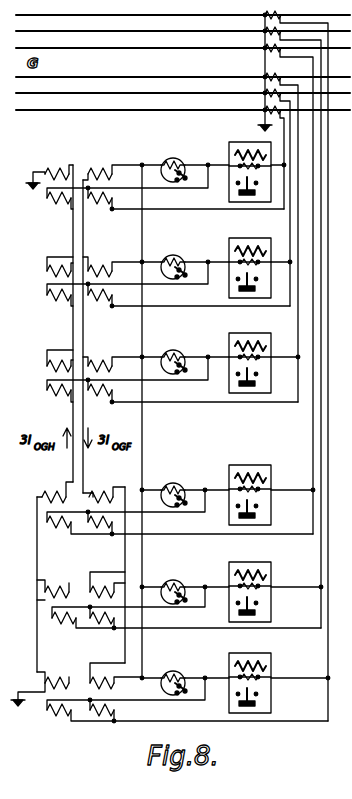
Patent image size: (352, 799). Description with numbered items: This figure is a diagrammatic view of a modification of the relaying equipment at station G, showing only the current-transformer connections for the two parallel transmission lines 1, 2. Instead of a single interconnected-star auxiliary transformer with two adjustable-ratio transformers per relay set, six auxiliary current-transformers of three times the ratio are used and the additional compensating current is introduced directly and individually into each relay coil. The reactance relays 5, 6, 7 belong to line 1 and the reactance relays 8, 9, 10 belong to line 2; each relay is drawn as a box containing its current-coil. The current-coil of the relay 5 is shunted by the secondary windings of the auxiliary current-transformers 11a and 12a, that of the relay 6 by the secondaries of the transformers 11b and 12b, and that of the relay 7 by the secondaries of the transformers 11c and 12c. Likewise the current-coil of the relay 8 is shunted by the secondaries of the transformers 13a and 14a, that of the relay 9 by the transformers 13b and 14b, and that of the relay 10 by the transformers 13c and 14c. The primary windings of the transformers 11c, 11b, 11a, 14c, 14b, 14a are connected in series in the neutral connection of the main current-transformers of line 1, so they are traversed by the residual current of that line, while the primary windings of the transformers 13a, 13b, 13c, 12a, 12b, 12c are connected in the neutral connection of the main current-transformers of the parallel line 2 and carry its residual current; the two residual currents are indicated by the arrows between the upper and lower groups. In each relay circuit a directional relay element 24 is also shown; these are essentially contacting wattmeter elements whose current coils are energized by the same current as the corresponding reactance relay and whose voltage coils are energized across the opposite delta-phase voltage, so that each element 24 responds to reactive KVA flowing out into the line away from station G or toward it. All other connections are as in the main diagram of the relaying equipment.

The transmission line 1 is at (186, 110).
The parallel transmission line 2 is at (127, 16).
The reactance relay 5 is at (271, 350).
The reactance relay 6 is at (271, 256).
The reactance relay 7 is at (251, 140).
The reactance relay 8 is at (272, 658).
The reactance relay 9 is at (272, 568).
The reactance relay 10 is at (272, 476).
The auxiliary current-transformer 11a is at (99, 362).
The auxiliary current-transformer 11b is at (97, 266).
The auxiliary current-transformer 11c is at (97, 166).
The auxiliary current-transformer 12a is at (56, 356).
The auxiliary current-transformer 12b is at (48, 260).
The auxiliary current-transformer 12c is at (57, 164).
The auxiliary current-transformer 13a is at (99, 676).
The auxiliary current-transformer 13b is at (97, 584).
The auxiliary current-transformer 13c is at (95, 494).
The auxiliary current-transformer 14a is at (52, 676).
The auxiliary current-transformer 14b is at (50, 582).
The auxiliary current-transformer 14c is at (50, 492).
The directional relay element 24 is at (168, 670).